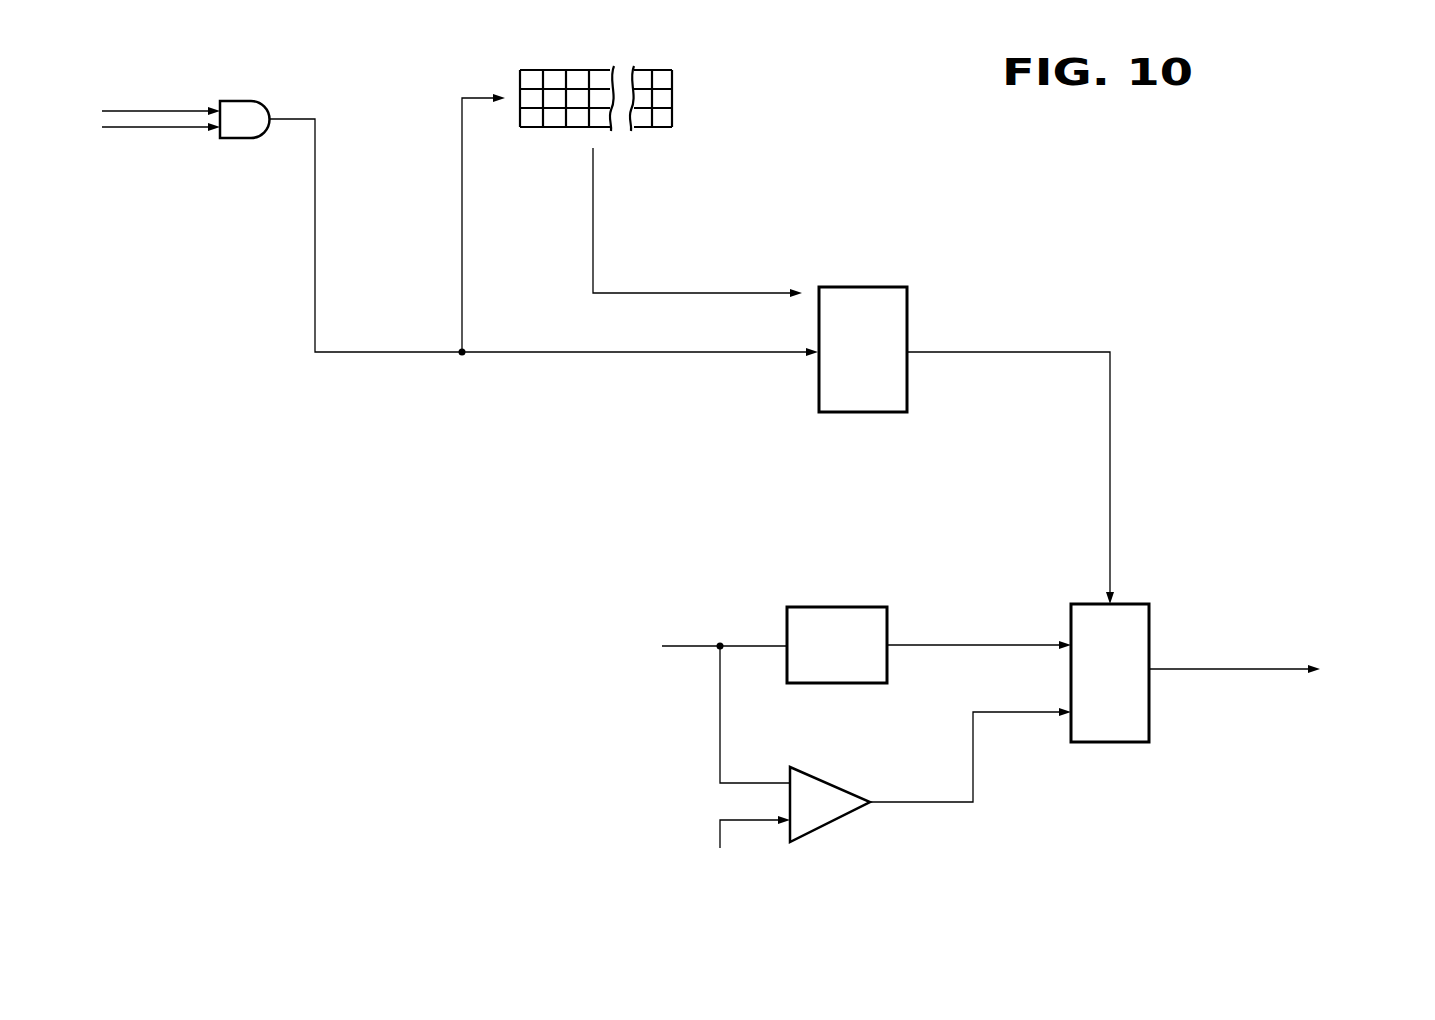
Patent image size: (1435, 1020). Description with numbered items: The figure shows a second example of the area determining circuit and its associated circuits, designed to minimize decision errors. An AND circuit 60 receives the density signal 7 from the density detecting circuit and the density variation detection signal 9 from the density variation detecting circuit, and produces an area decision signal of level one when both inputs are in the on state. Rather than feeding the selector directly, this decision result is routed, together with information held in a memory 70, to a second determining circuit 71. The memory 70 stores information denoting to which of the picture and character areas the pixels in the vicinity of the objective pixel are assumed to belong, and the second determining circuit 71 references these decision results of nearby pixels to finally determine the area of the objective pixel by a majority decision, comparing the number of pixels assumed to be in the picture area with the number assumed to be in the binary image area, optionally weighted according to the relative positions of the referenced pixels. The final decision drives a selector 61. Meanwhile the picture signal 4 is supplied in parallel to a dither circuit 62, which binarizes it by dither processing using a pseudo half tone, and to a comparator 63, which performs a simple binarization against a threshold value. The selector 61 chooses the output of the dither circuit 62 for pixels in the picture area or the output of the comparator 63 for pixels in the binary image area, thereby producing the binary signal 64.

The density signal 7 is at (144, 81).
The density variation detection signal 9 is at (134, 166).
The AND circuit 60 is at (250, 101).
The memory 70 is at (672, 93).
The second determining circuit 71 is at (867, 287).
The picture signal 4 is at (691, 682).
The dither circuit 62 is at (845, 607).
The comparator 63 is at (808, 772).
The selector 61 is at (1133, 604).
The binary signal 64 is at (1283, 699).